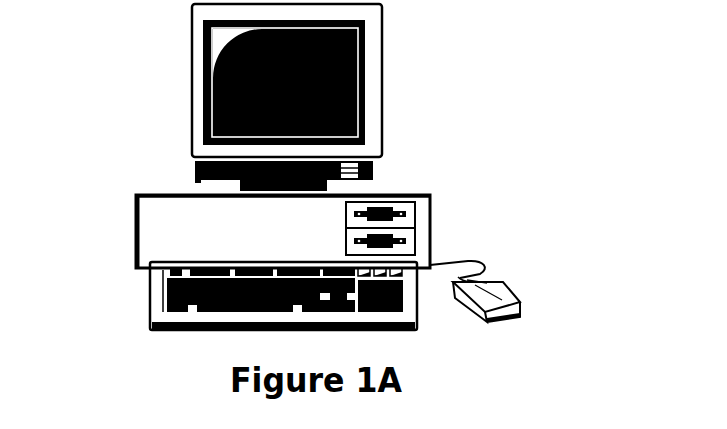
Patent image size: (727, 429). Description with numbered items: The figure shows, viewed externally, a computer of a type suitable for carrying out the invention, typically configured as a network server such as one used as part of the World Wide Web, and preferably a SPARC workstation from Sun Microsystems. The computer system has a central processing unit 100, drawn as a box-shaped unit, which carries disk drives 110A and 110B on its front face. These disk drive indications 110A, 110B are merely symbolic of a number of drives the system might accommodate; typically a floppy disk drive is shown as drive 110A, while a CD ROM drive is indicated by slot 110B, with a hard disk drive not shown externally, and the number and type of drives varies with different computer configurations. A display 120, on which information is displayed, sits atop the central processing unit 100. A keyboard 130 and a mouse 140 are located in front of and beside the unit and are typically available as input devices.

The central processing unit 100 is at (132, 210).
The disk drive 110A is at (341, 216).
The disk drive 110B is at (341, 247).
The display 120 is at (385, 84).
The keyboard 130 is at (147, 305).
The mouse 140 is at (515, 290).